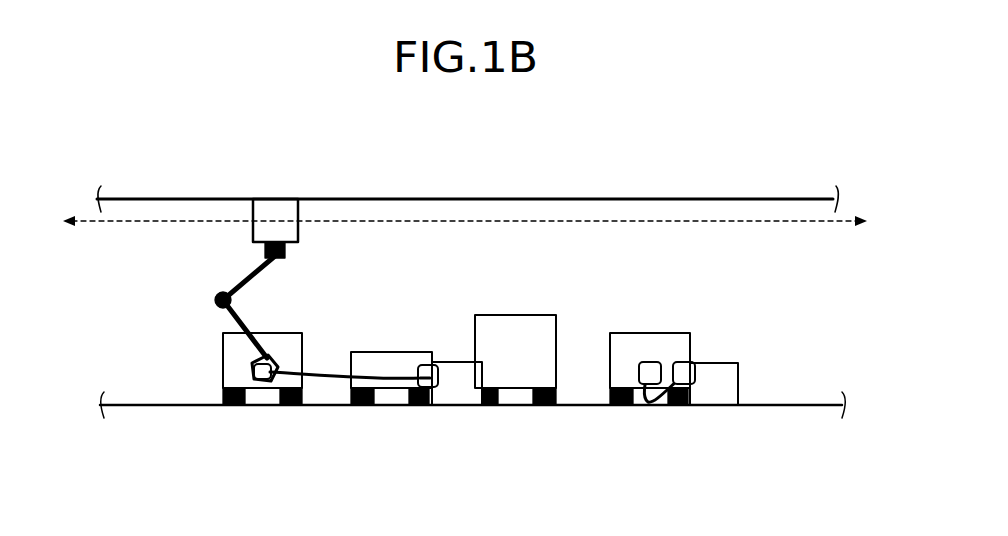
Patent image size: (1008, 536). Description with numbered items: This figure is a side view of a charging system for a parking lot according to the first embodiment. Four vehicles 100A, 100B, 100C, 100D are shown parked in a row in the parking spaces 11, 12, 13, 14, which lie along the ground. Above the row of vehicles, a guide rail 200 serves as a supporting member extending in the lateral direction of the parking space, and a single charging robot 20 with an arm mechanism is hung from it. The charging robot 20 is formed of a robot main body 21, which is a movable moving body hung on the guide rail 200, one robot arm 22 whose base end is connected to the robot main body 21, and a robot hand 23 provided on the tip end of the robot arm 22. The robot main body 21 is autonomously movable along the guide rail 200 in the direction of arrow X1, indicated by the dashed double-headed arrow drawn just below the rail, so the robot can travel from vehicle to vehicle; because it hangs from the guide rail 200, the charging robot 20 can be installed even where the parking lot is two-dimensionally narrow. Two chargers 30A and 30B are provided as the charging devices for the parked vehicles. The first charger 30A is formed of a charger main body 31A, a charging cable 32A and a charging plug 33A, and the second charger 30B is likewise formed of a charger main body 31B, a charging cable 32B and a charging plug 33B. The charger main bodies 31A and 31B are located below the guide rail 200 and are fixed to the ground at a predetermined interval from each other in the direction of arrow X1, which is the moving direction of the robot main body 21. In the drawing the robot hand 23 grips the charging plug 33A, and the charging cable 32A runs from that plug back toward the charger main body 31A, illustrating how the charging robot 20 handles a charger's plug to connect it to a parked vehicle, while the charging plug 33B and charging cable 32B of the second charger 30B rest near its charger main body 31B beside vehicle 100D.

The guide rail 200 is at (170, 199).
The arrow X1 is at (813, 221).
The charging robot 20 is at (273, 265).
The robot main body 21 is at (253, 230).
The robot arm 22 is at (232, 321).
The robot hand 23 is at (250, 368).
The vehicle 100A is at (265, 333).
The vehicle 100B is at (372, 352).
The vehicle 100C is at (515, 315).
The vehicle 100D is at (662, 333).
The charger 30A is at (453, 365).
The charger 30B is at (771, 418).
The charger main body 31A is at (450, 397).
The charger main body 31B is at (736, 395).
The charging cable 32A is at (328, 383).
The charging cable 32B is at (645, 362).
The charging plug 33A is at (262, 384).
The charging plug 33B is at (669, 364).
The parking space 11 is at (267, 419).
The parking space 12 is at (387, 416).
The parking space 13 is at (520, 416).
The parking space 14 is at (648, 416).